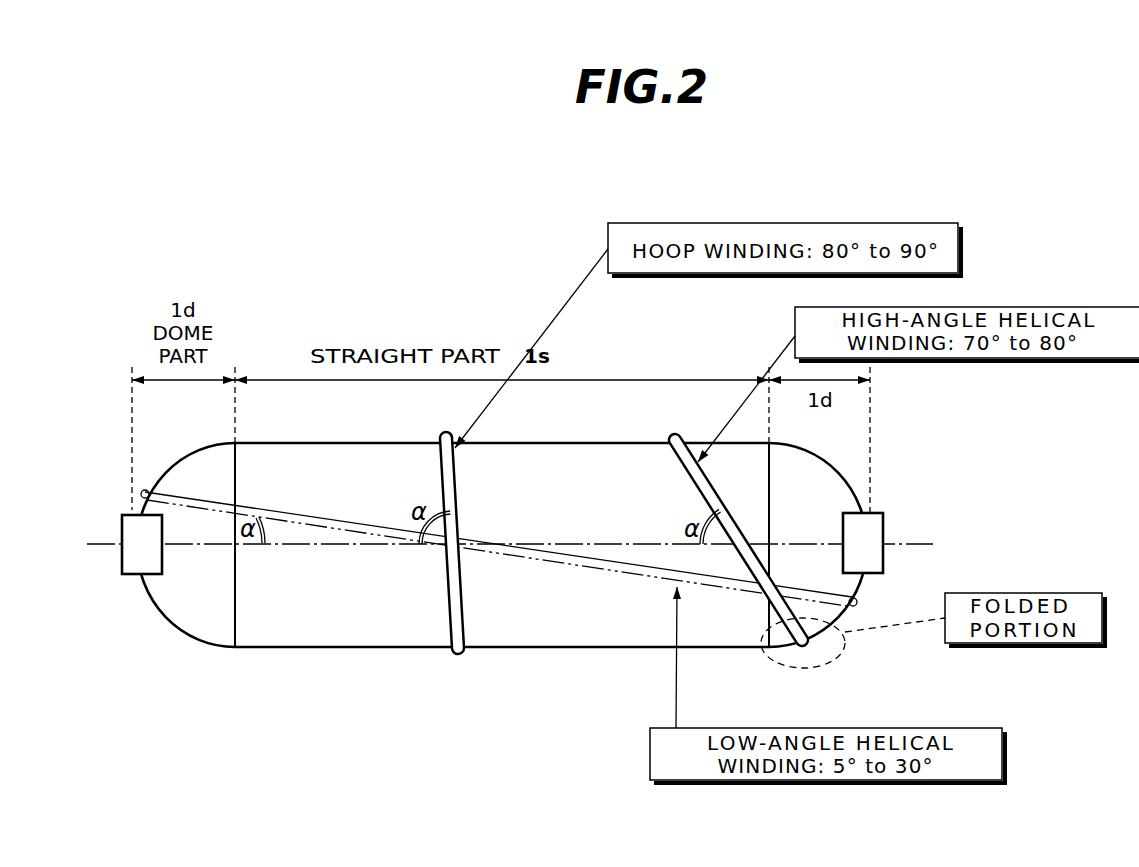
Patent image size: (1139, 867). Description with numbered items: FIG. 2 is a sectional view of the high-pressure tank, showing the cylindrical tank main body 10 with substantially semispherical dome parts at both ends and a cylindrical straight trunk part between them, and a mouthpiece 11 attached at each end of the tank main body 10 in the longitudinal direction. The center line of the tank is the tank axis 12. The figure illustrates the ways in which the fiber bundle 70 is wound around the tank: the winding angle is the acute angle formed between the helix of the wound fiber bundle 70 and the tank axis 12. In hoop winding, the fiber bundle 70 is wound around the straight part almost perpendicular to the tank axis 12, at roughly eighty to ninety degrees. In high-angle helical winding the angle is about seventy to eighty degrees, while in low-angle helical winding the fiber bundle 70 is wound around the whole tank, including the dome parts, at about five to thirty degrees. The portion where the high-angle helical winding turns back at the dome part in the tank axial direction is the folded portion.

The tank main body 10 is at (335, 625).
The mouthpiece 11 is at (130, 562).
The tank axis 12 is at (313, 545).
The fiber bundle 70 is at (448, 497).